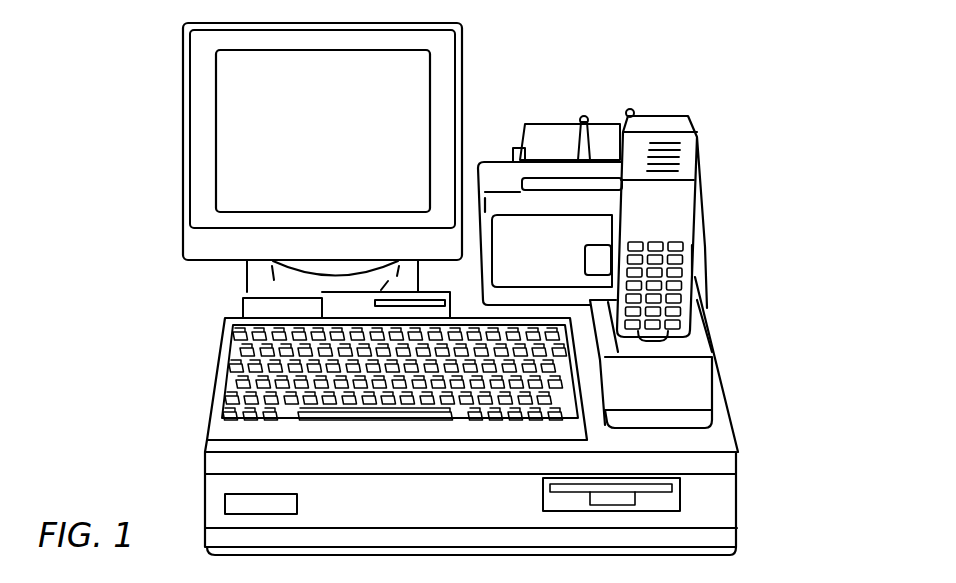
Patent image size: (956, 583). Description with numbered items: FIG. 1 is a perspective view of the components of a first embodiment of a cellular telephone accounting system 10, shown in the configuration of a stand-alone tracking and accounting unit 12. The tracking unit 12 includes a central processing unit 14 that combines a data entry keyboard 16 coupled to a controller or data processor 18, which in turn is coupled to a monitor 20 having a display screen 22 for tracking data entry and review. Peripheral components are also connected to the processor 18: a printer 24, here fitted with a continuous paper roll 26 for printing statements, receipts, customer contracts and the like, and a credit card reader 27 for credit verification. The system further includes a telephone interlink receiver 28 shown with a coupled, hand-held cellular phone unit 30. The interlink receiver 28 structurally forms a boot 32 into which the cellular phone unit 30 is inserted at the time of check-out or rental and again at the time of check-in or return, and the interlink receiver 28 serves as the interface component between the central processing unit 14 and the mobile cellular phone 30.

The cellular telephone accounting system 10 is at (616, 107).
The tracking and accounting unit 12 is at (205, 373).
The central processing unit 14 is at (749, 442).
The data entry keyboard 16 is at (412, 437).
The data processor 18 is at (205, 470).
The monitor 20 is at (462, 88).
The display screen 22 is at (410, 78).
The printer 24 is at (707, 233).
The continuous paper roll 26 is at (548, 127).
The credit card reader 27 is at (322, 298).
The telephone interlink receiver 28 is at (720, 324).
The cellular phone unit 30 is at (677, 197).
The boot 32 is at (698, 380).